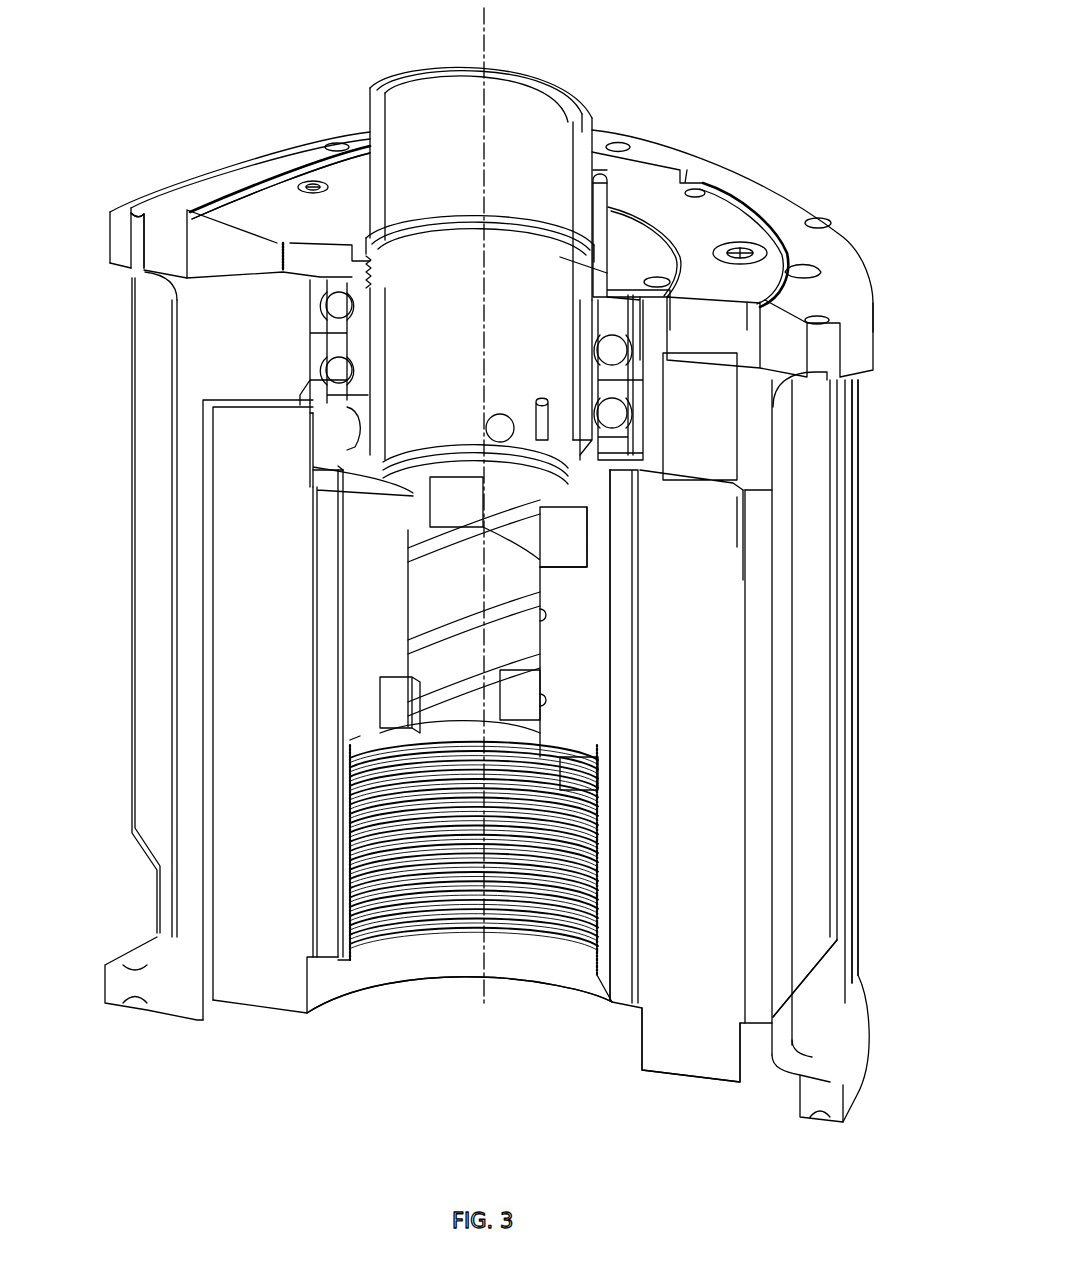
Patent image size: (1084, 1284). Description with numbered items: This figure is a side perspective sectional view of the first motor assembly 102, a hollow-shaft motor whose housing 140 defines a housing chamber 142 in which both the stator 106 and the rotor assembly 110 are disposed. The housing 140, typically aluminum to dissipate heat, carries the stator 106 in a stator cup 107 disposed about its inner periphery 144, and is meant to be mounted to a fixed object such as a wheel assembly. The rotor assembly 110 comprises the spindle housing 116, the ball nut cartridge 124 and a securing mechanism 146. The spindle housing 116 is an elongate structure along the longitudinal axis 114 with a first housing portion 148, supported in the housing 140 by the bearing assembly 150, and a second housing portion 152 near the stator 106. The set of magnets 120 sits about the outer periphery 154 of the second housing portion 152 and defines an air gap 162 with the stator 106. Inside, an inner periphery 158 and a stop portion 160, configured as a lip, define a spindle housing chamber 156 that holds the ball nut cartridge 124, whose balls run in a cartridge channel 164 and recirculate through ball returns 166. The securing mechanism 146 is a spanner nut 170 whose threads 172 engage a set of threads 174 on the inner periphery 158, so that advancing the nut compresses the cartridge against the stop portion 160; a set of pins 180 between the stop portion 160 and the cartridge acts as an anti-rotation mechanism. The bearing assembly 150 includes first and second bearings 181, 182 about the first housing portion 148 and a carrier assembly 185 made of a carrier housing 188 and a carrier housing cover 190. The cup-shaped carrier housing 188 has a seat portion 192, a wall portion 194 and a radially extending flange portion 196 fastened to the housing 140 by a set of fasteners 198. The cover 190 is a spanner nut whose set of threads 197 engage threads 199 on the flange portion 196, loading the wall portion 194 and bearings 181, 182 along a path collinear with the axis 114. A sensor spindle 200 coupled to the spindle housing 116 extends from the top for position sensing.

The first motor assembly 102 is at (765, 64).
The stator 106 is at (683, 1073).
The stator cup 107 is at (740, 490).
The rotor assembly 110 is at (648, 623).
The longitudinal axis 114 is at (490, 37).
The spindle housing 116 is at (612, 703).
The set of magnets 120 is at (327, 568).
The ball nut cartridge 124 is at (577, 638).
The housing 140 is at (857, 955).
The housing chamber 142 is at (463, 983).
The inner periphery 144 is at (742, 710).
The securing mechanism 146 is at (338, 742).
The first housing portion 148 is at (572, 335).
The bearing assembly 150 is at (818, 262).
The second housing portion 152 is at (603, 742).
The outer periphery 154 is at (338, 600).
The spindle housing chamber 156 is at (387, 477).
The inner periphery 158 is at (355, 543).
The stop portion 160 is at (357, 471).
The air gap 162 is at (635, 920).
The cartridge channel 164 is at (410, 638).
The ball returns 166 is at (460, 497).
The spanner nut 170 is at (373, 735).
The threads 172 is at (603, 778).
The set of threads 174 is at (365, 947).
The set of pins 180 is at (543, 412).
The first bearing 181 is at (317, 316).
The second bearing 182 is at (307, 370).
The carrier assembly 185 is at (648, 197).
The carrier housing 188 is at (648, 304).
The carrier housing cover 190 is at (290, 247).
The seat portion 192 is at (302, 395).
The wall portion 194 is at (653, 427).
The flange portion 196 is at (198, 244).
The set of threads 197 is at (602, 296).
The set of fasteners 198 is at (293, 259).
The set of threads 199 is at (292, 246).
The sensor spindle 200 is at (584, 92).